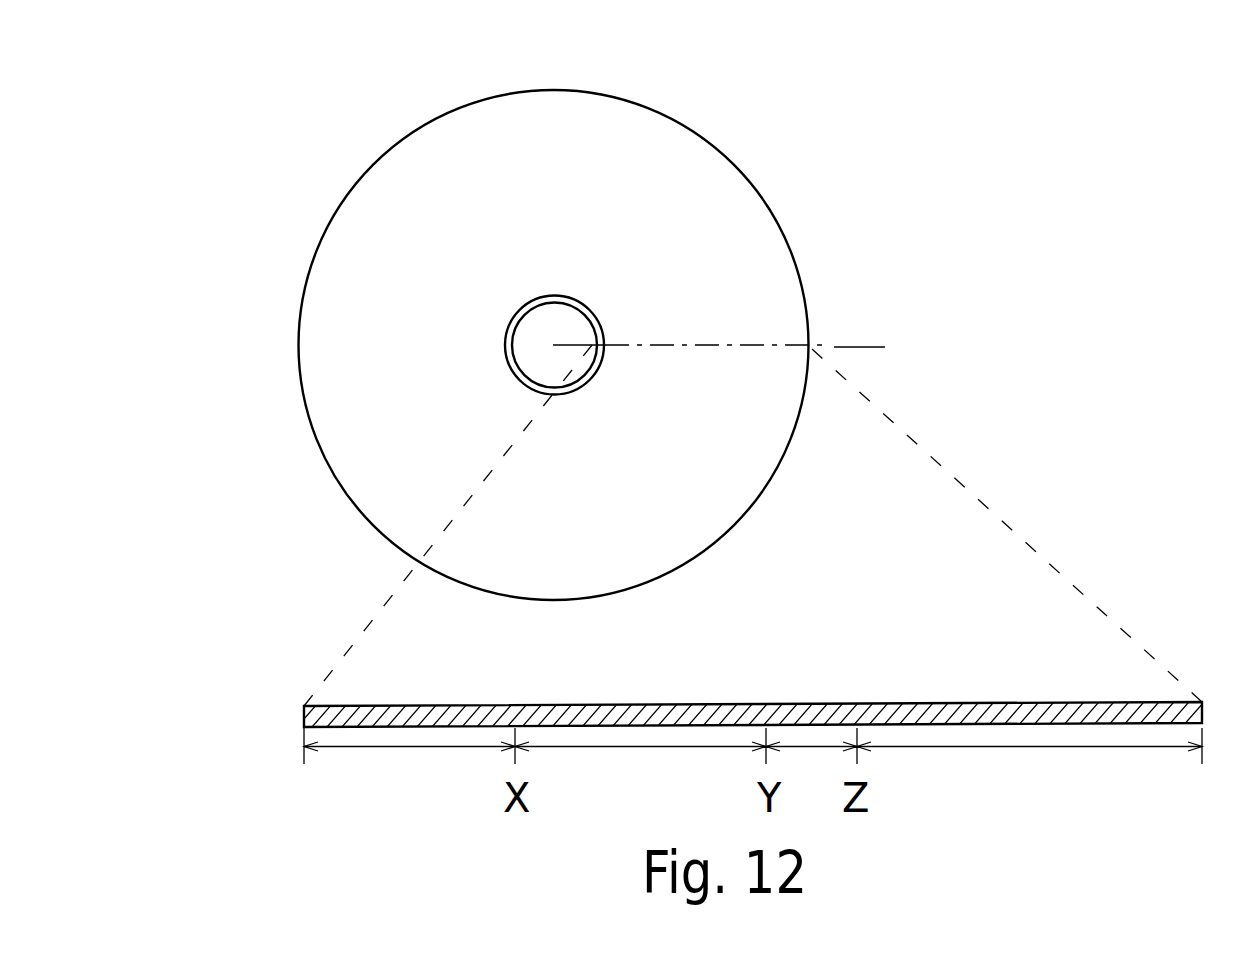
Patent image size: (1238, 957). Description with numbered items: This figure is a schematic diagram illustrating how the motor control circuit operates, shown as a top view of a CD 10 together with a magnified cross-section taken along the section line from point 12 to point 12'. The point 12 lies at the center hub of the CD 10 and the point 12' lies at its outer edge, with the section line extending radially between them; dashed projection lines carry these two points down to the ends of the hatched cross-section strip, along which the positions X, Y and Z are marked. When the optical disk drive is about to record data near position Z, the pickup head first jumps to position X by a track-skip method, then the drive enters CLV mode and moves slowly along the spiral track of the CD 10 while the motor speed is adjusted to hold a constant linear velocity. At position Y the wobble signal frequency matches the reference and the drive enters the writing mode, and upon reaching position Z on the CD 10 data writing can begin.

The CD 10 is at (1008, 185).
The cross-section line endpoint 12 is at (446, 422).
The cross-section line endpoint 12' is at (914, 417).